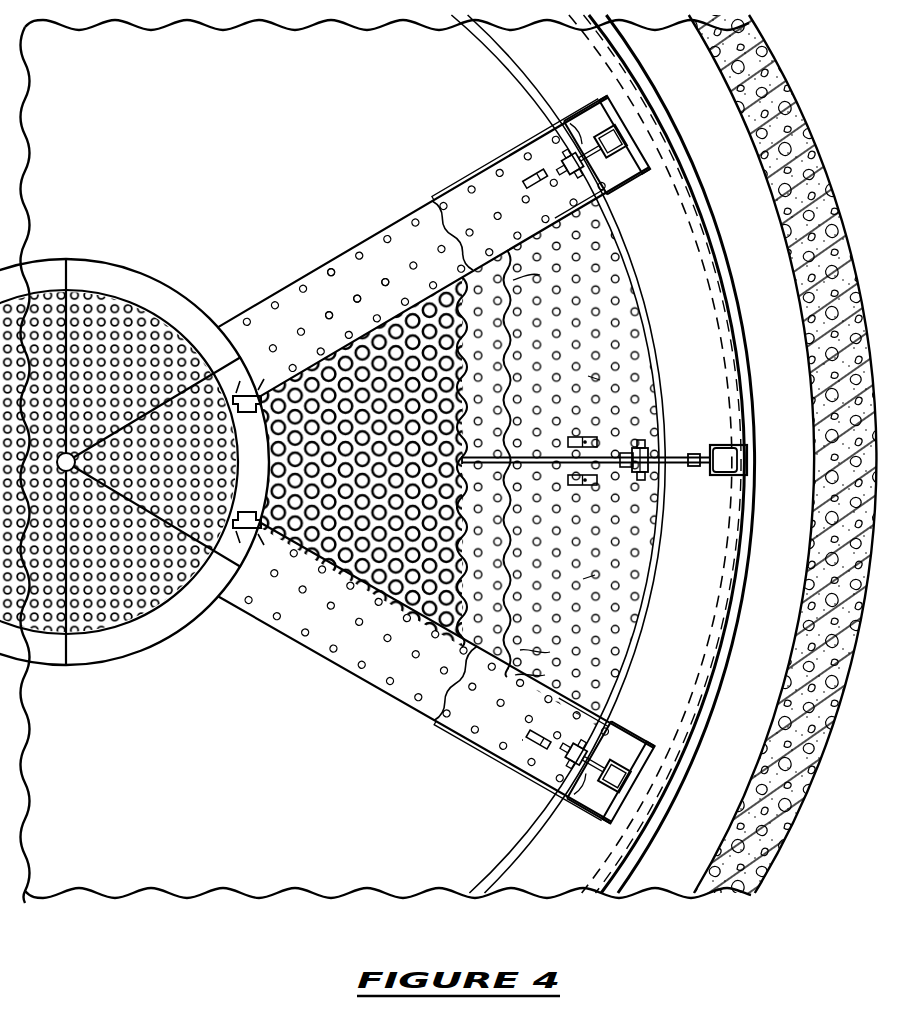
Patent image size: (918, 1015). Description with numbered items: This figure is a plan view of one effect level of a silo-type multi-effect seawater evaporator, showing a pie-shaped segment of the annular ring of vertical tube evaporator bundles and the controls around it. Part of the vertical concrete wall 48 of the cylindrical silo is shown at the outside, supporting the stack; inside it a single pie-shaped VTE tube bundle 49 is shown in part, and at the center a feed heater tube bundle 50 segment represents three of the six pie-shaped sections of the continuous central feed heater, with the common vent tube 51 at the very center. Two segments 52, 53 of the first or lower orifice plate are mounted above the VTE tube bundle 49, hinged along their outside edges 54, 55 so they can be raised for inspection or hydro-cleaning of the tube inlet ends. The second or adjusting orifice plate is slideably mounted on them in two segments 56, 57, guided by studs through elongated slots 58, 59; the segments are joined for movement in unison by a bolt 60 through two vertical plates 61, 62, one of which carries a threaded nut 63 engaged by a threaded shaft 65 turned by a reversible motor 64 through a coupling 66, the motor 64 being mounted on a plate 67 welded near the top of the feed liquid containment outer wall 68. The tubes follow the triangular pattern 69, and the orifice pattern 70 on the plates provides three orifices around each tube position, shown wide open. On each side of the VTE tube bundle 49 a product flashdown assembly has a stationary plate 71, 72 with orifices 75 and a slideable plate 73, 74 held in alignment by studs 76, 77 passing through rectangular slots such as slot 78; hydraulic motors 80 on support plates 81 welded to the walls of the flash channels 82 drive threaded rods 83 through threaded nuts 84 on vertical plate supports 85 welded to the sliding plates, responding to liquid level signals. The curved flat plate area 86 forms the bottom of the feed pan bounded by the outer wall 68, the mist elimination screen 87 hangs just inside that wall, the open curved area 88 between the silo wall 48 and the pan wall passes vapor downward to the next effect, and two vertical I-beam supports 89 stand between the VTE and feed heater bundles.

The concrete wall 48 is at (813, 130).
The VTE tube bundle 49 is at (312, 570).
The feed heater tube bundle 50 is at (162, 427).
The common vent tube 51 is at (98, 662).
The first orifice plate segment 52 is at (530, 300).
The first orifice plate segment 53 is at (520, 650).
The outside edge 54 is at (513, 280).
The outside edge 55 is at (515, 675).
The second orifice plate segment 56 is at (600, 380).
The second orifice plate segment 57 is at (595, 575).
The elongated slot 58 is at (590, 432).
The elongated slot 59 is at (598, 545).
The bolt 60 is at (628, 453).
The vertical plate 61 is at (660, 457).
The vertical plate 62 is at (628, 470).
The threaded nut 63 is at (645, 481).
The motor 64 is at (725, 445).
The threaded shaft 65 is at (692, 454).
The coupling 66 is at (747, 485).
The plate 67 is at (738, 458).
The feed liquid containment outer wall 68 is at (757, 473).
The triangular tube pattern 69 is at (424, 254).
The orifice pattern 70 is at (658, 326).
The stationary orifice plate 71 is at (433, 247).
The stationary orifice plate 72 is at (436, 672).
The slideable orifice plate 73 is at (535, 183).
The slideable orifice plate 74 is at (539, 736).
The orifices 75 is at (385, 282).
The bolt, pin or stud 76 is at (535, 178).
The bolt, pin or stud 77 is at (523, 740).
The rectangular slot 78 is at (522, 184).
The hydraulic motor 80 is at (600, 147).
The support plate 81 is at (607, 145).
The flash channel 82 is at (624, 135).
The threaded rod 83 is at (585, 157).
The threaded nut 84 is at (568, 166).
The vertical plate support 85 is at (577, 133).
The curved flat plate area 86 is at (698, 644).
The mist elimination screen 87 is at (700, 196).
The open curved area 88 is at (790, 320).
The I-beam support 89 is at (240, 402).